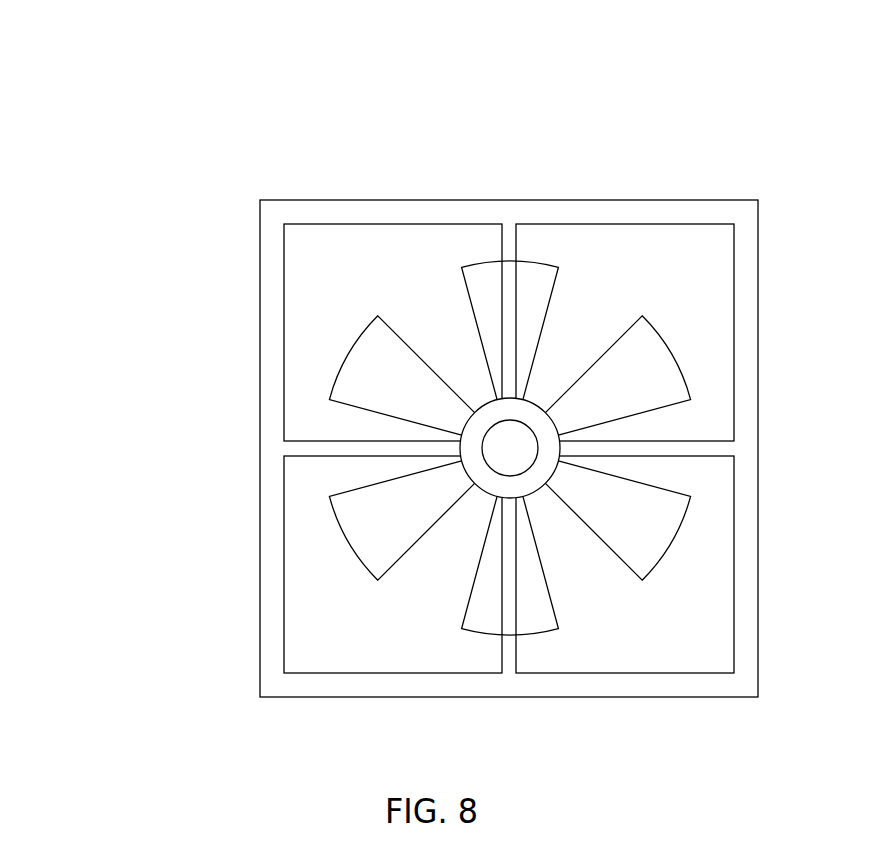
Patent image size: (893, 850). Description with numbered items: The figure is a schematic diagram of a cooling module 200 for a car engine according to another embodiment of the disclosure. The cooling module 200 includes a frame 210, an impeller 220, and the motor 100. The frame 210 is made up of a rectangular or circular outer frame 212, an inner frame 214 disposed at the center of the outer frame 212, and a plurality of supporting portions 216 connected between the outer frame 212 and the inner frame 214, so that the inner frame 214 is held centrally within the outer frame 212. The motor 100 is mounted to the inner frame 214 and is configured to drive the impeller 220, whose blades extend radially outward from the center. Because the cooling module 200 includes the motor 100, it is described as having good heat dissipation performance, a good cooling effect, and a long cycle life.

The motor 100 is at (508, 448).
The cooling module 200 is at (562, 41).
The frame 210 is at (132, 547).
The outer frame 212 is at (273, 555).
The inner frame 214 is at (487, 483).
The supporting portions 216 is at (507, 646).
The impeller 220 is at (393, 363).